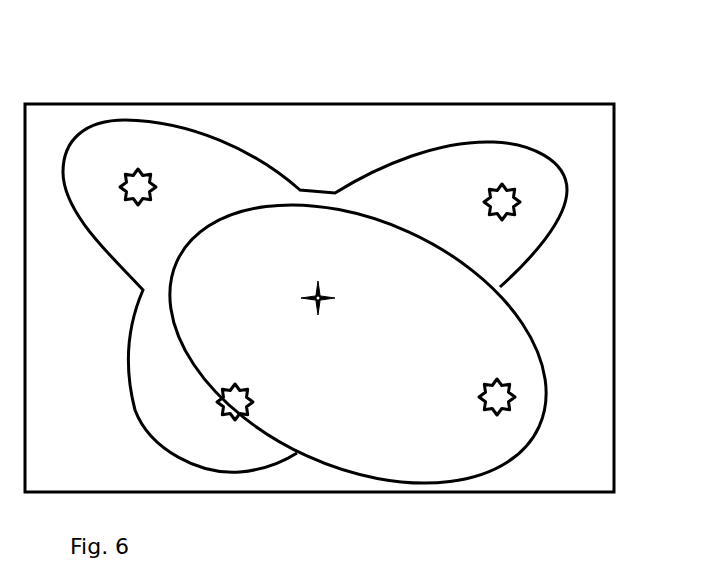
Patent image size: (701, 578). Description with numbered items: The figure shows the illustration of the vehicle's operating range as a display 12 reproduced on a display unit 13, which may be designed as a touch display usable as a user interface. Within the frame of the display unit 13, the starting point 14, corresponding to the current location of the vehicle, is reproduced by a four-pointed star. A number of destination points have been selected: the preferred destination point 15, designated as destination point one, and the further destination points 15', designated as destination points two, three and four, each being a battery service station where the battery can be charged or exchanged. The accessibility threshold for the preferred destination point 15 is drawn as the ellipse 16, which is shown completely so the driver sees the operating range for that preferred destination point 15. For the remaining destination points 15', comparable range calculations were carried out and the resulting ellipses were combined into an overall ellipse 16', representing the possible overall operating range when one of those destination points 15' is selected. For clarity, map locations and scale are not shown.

The display 12 is at (177, 78).
The display unit 13 is at (453, 103).
The starting point 14 is at (316, 283).
The destination point 15 is at (459, 397).
The destination points 15' is at (317, 297).
The ellipse 16 is at (358, 344).
The overall ellipse 16' is at (311, 296).